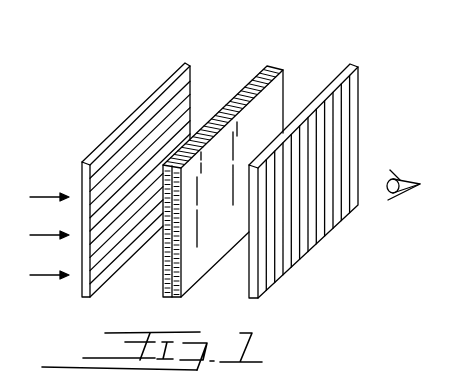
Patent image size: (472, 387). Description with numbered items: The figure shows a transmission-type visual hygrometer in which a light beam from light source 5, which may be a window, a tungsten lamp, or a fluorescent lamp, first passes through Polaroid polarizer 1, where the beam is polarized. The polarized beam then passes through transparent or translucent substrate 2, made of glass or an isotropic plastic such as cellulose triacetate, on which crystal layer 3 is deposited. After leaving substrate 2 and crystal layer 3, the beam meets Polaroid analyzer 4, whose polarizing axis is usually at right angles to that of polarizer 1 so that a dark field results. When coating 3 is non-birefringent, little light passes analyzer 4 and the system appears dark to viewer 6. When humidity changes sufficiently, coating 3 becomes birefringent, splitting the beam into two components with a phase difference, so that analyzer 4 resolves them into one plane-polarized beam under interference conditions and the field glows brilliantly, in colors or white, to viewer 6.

The Polaroid polarizer 1 is at (186, 63).
The transparent or translucent substrate 2 is at (266, 65).
The crystal layer 3 is at (282, 69).
The Polaroid analyzer 4 is at (353, 66).
The light source 5 is at (42, 197).
The viewer 6 is at (395, 170).